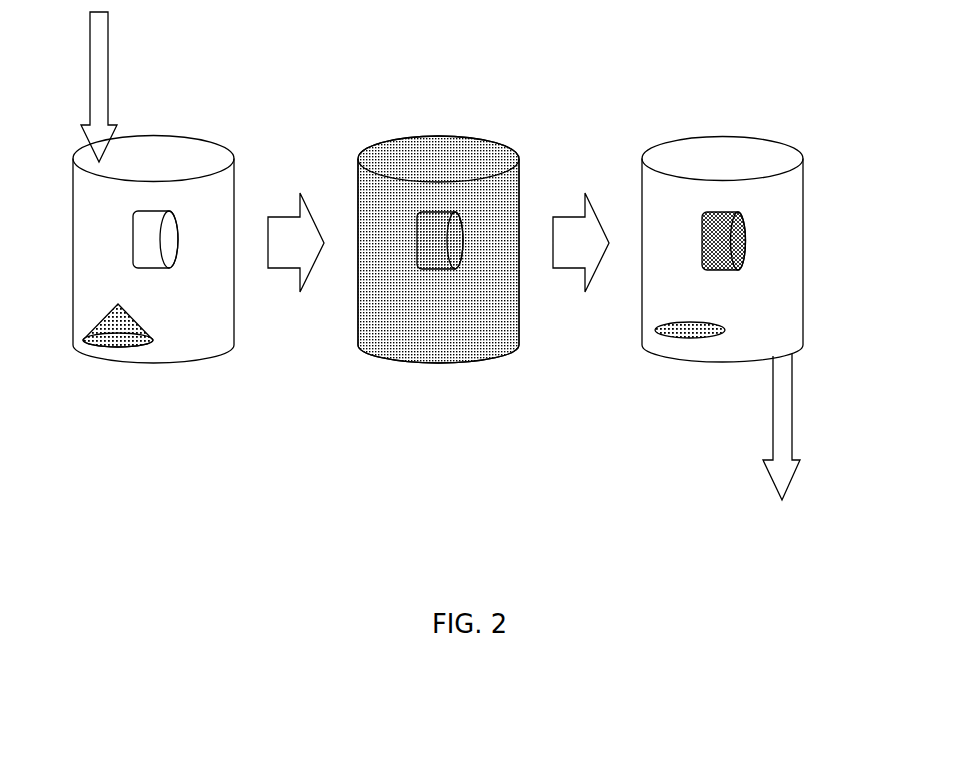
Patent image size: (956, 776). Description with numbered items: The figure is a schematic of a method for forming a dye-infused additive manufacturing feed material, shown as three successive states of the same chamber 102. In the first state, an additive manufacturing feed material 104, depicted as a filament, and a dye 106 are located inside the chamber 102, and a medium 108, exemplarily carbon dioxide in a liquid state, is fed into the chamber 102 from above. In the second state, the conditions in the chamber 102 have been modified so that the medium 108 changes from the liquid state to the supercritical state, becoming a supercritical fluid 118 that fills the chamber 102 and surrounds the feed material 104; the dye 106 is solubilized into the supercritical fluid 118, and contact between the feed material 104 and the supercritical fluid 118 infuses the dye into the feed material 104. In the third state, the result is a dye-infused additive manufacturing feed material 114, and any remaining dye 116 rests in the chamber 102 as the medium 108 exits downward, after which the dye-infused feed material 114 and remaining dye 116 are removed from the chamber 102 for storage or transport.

The chamber 102 is at (195, 153).
The additive manufacturing feed material 104 is at (140, 238).
The dye 106 is at (110, 310).
The medium 108 is at (108, 50).
The dye-infused additive manufacturing feed material 114 is at (717, 225).
The remaining dye 116 is at (688, 338).
The supercritical fluid 118 is at (396, 330).